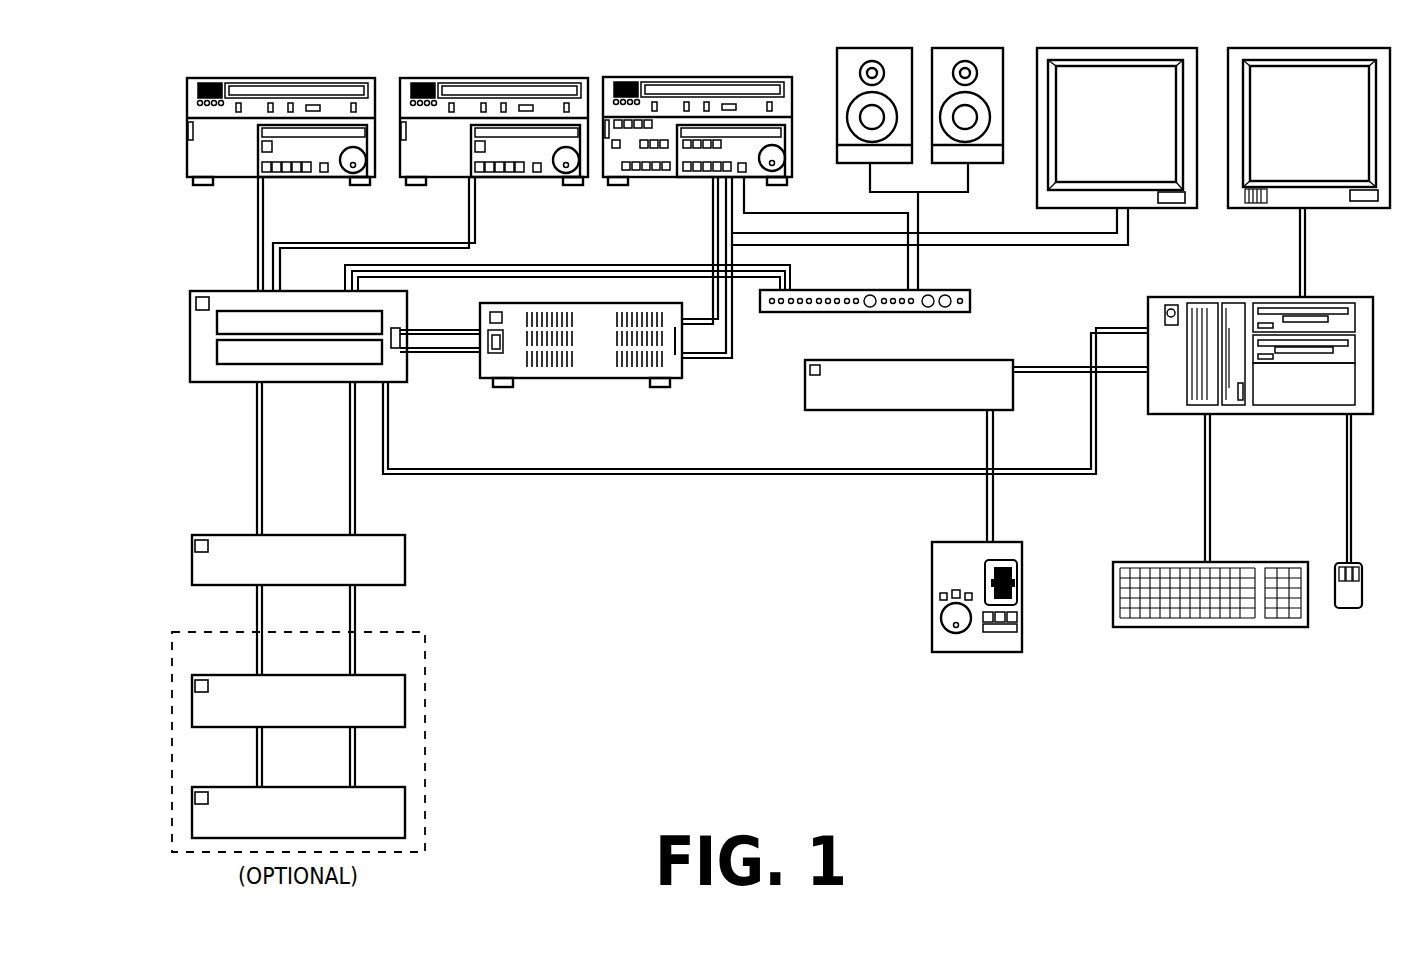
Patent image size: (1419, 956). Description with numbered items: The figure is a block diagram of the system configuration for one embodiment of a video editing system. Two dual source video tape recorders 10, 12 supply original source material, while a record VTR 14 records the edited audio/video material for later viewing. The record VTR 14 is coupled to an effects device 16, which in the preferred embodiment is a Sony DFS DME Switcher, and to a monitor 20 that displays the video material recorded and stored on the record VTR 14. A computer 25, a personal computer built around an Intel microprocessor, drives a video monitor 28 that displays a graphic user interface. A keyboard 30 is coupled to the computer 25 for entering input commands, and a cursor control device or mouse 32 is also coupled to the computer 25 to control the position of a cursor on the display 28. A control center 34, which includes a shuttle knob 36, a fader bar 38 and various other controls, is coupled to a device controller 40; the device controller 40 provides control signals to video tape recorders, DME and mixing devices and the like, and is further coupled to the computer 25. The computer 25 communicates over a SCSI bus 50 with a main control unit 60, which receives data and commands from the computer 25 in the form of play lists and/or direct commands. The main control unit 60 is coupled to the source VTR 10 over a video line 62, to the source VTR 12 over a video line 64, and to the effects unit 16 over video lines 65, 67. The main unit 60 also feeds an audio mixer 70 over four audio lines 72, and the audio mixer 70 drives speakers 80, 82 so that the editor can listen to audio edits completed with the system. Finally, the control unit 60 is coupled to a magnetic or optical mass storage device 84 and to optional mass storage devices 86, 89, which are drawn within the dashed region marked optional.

The source video tape recorder 10 is at (321, 78).
The source video tape recorder 12 is at (534, 78).
The record VTR 14 is at (746, 77).
The effects device 16 is at (572, 372).
The monitor 20 is at (1102, 48).
The computer 25 is at (1255, 297).
The video monitor 28 is at (1304, 48).
The keyboard 30 is at (1178, 562).
The cursor control device 32 is at (1363, 590).
The control center 34 is at (960, 541).
The shuttle knob 36 is at (940, 622).
The fader bar 38 is at (1020, 565).
The device controller 40 is at (808, 392).
The SCSI bus 50 is at (645, 476).
The main control unit 60 is at (230, 291).
The video line 62 is at (265, 190).
The video line 64 is at (477, 197).
The cable 65 is at (424, 355).
The video line 67 is at (427, 329).
The audio mixer 70 is at (967, 303).
The audio lines 72 is at (795, 270).
The speaker 80 is at (864, 48).
The speaker 82 is at (957, 48).
The mass storage device 84 is at (378, 535).
The optional mass storage device 86 is at (372, 675).
The optional mass storage device 89 is at (377, 787).